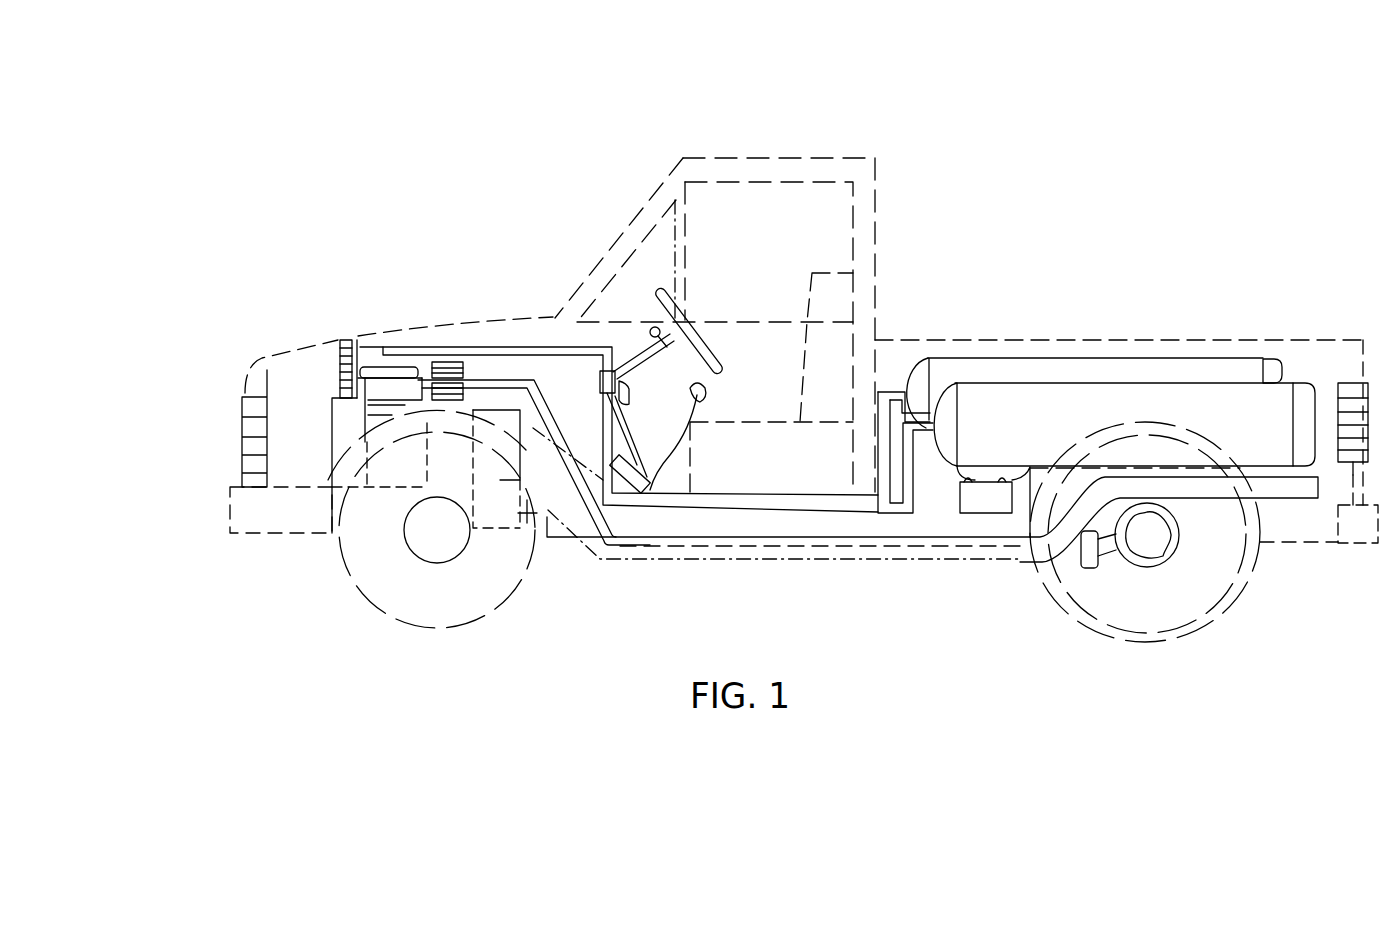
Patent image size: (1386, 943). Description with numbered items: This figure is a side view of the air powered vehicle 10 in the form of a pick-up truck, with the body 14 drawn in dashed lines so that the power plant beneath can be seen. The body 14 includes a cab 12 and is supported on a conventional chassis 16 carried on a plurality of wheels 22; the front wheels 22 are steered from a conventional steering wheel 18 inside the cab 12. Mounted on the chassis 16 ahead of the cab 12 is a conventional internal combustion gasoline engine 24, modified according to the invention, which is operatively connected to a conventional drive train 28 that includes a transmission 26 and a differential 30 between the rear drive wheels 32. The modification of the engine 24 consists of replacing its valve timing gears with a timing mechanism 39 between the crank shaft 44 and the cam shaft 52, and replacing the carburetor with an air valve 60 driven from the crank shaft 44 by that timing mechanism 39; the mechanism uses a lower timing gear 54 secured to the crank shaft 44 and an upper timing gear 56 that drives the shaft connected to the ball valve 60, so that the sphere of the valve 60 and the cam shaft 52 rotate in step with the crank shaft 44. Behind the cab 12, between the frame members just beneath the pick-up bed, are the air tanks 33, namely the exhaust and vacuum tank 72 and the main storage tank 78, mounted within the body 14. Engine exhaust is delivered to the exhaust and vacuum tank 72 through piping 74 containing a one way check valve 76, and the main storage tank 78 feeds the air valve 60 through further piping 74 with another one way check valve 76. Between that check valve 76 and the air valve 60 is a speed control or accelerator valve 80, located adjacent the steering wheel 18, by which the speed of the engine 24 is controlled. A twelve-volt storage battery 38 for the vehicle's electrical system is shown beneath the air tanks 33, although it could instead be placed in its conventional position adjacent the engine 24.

The vehicle 10 is at (892, 135).
The cab 12 is at (747, 168).
The body 14 is at (1248, 340).
The chassis 16 is at (740, 523).
The steering wheel 18 is at (683, 330).
The wheels 22 is at (392, 597).
The internal combustion gasoline engine 24 is at (390, 367).
The transmission 26 is at (487, 508).
The drive train 28 is at (527, 513).
The differential 30 is at (1082, 567).
The rear drive wheels 32 is at (1163, 592).
The air tanks 33 is at (1100, 410).
The storage battery 38 is at (987, 493).
The timing mechanism 39 is at (340, 388).
The crank shaft 44 is at (465, 432).
The cam shaft 52 is at (345, 338).
The lower timing gear 54 is at (340, 398).
The upper timing gear 56 is at (340, 378).
The air valve 60 is at (362, 340).
The exhaust and vacuum tank 72 is at (1157, 377).
The piping 74 is at (885, 477).
The one way check valve 76 is at (948, 425).
The main storage tank 78 is at (990, 407).
The speed control valve 80 is at (647, 487).